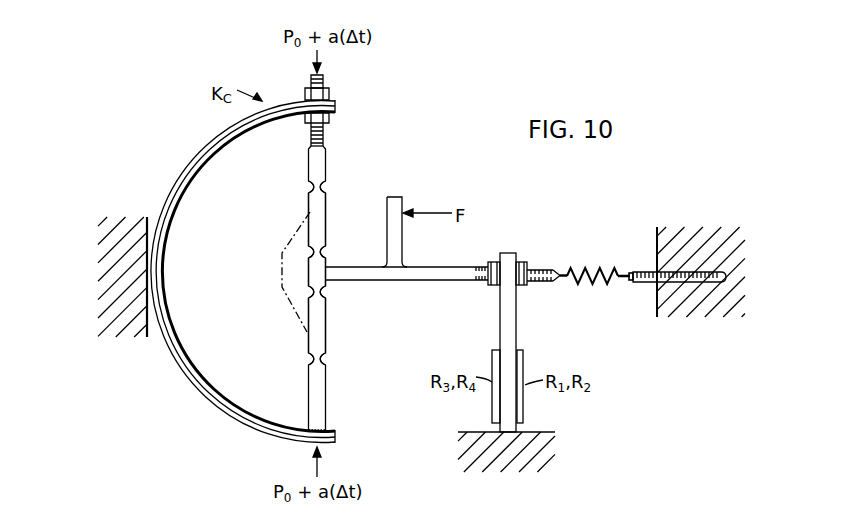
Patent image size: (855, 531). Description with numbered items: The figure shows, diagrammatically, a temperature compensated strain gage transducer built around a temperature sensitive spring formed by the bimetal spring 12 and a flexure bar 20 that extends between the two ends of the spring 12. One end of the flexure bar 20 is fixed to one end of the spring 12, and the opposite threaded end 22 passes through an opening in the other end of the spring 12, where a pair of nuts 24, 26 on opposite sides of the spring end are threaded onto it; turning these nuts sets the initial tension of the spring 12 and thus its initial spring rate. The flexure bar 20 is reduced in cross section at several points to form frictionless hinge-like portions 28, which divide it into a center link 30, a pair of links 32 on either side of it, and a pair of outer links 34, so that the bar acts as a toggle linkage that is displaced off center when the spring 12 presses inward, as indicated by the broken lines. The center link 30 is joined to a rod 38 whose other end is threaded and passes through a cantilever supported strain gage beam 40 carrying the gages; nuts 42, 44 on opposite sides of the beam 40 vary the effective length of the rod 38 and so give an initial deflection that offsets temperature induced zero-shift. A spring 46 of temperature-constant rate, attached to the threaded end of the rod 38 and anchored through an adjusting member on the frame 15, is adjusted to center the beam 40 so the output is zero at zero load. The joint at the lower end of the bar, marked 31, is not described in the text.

The bimetal spring 12 is at (204, 141).
The frame 15 is at (147, 216).
The flexure bar 20 is at (292, 174).
The threaded end of flexure bar 22 is at (326, 80).
The nut 24 is at (330, 94).
The nut 26 is at (330, 119).
The hinge-like portions 28 is at (322, 188).
The center link 30 is at (324, 270).
The lower attachment joint 31 is at (326, 430).
The links 32 is at (326, 220).
The links 34 is at (326, 162).
The rod 38 is at (414, 281).
The strain gage beam 40 is at (518, 322).
The nut 42 is at (496, 262).
The nut 44 is at (522, 265).
The spring 46 is at (589, 268).